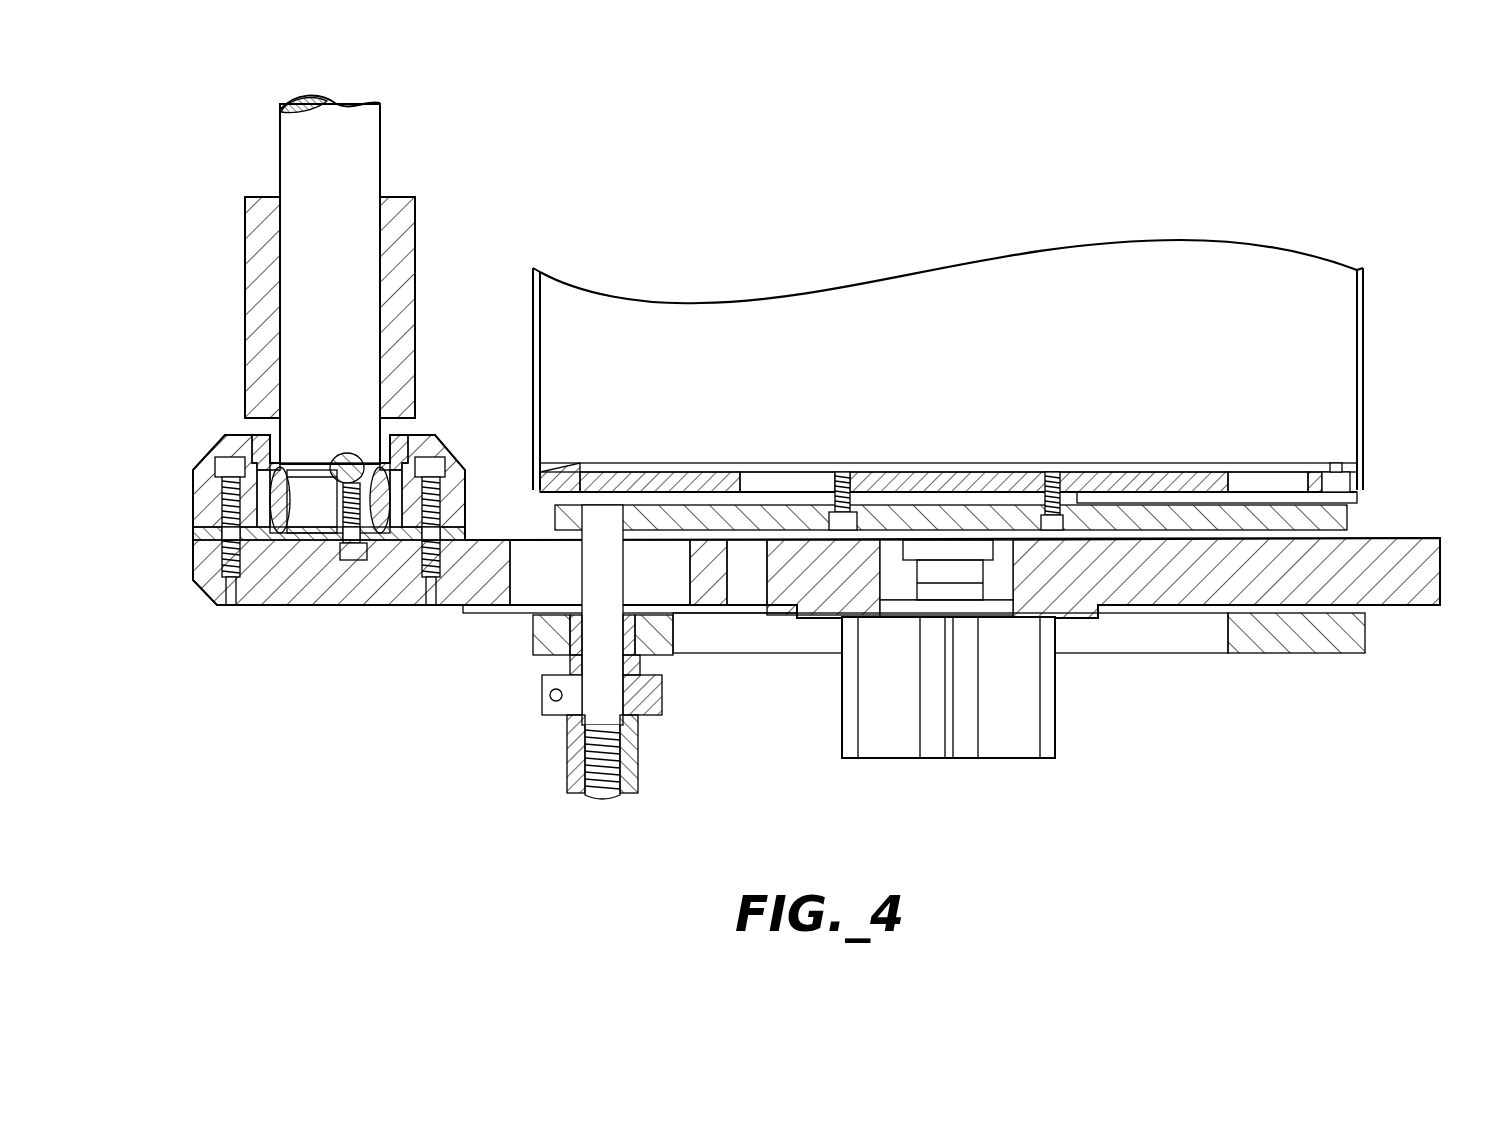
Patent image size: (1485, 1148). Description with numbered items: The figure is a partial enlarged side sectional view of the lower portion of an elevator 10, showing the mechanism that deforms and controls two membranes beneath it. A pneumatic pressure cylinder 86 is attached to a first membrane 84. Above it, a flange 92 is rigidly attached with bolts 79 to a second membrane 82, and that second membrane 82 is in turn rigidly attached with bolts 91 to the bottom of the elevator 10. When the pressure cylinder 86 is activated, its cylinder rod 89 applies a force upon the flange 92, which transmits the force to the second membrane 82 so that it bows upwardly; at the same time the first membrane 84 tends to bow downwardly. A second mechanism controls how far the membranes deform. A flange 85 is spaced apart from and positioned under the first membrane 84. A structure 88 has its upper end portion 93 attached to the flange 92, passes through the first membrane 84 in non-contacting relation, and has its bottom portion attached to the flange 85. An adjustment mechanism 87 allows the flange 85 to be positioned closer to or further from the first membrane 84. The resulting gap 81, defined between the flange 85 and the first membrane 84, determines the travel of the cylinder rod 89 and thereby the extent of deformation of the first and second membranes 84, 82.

The elevator 10 is at (1275, 262).
The bolts 79 is at (1052, 472).
The gap 81 is at (1250, 605).
The second membrane 82 is at (1318, 472).
The first membrane 84 is at (1413, 595).
The flange 85 is at (1347, 645).
The pneumatic pressure cylinder 86 is at (1013, 740).
The adjustment mechanism 87 is at (652, 697).
The structure 88 is at (597, 667).
The cylinder rod 89 is at (930, 548).
The bolts 91 is at (1322, 474).
The flange 92 is at (1322, 520).
The upper end portion 93 is at (588, 562).